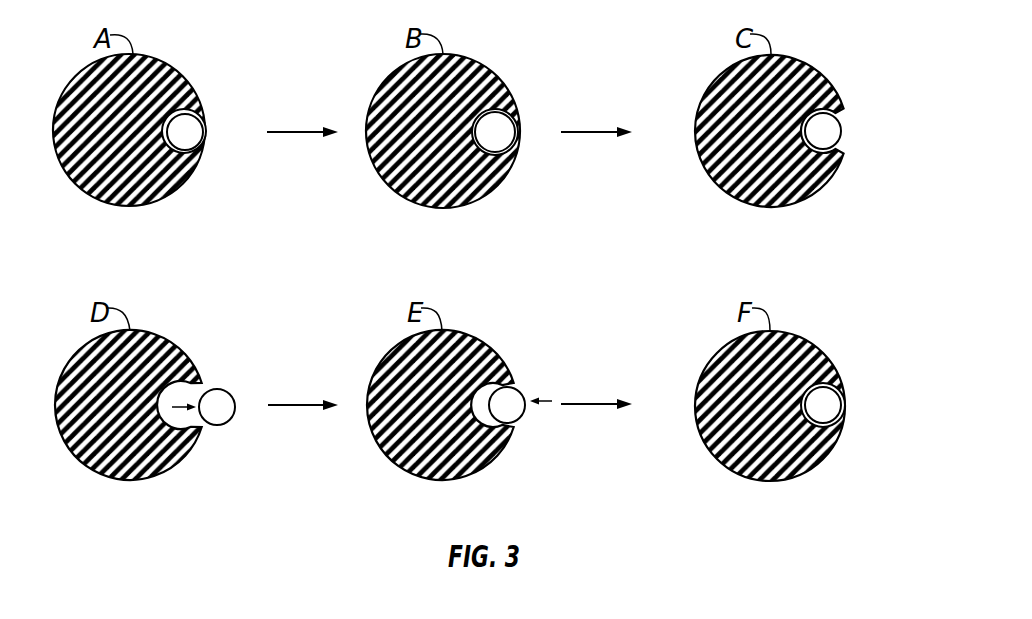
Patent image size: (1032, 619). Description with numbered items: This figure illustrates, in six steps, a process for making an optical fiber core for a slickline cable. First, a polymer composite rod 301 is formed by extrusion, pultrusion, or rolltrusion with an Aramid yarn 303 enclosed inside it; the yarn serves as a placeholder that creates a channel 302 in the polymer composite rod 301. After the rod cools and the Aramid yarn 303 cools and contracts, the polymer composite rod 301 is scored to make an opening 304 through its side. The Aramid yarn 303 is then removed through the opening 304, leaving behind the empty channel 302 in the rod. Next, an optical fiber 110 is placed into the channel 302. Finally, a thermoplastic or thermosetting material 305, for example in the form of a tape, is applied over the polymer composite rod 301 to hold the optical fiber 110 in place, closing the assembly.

The polymer composite rod 301 is at (173, 73).
The channel 302 is at (183, 152).
The Aramid yarn 303 is at (187, 133).
The opening 304 is at (851, 124).
The optical fiber 110 is at (520, 414).
The thermoplastic or thermosetting material 305 is at (845, 407).